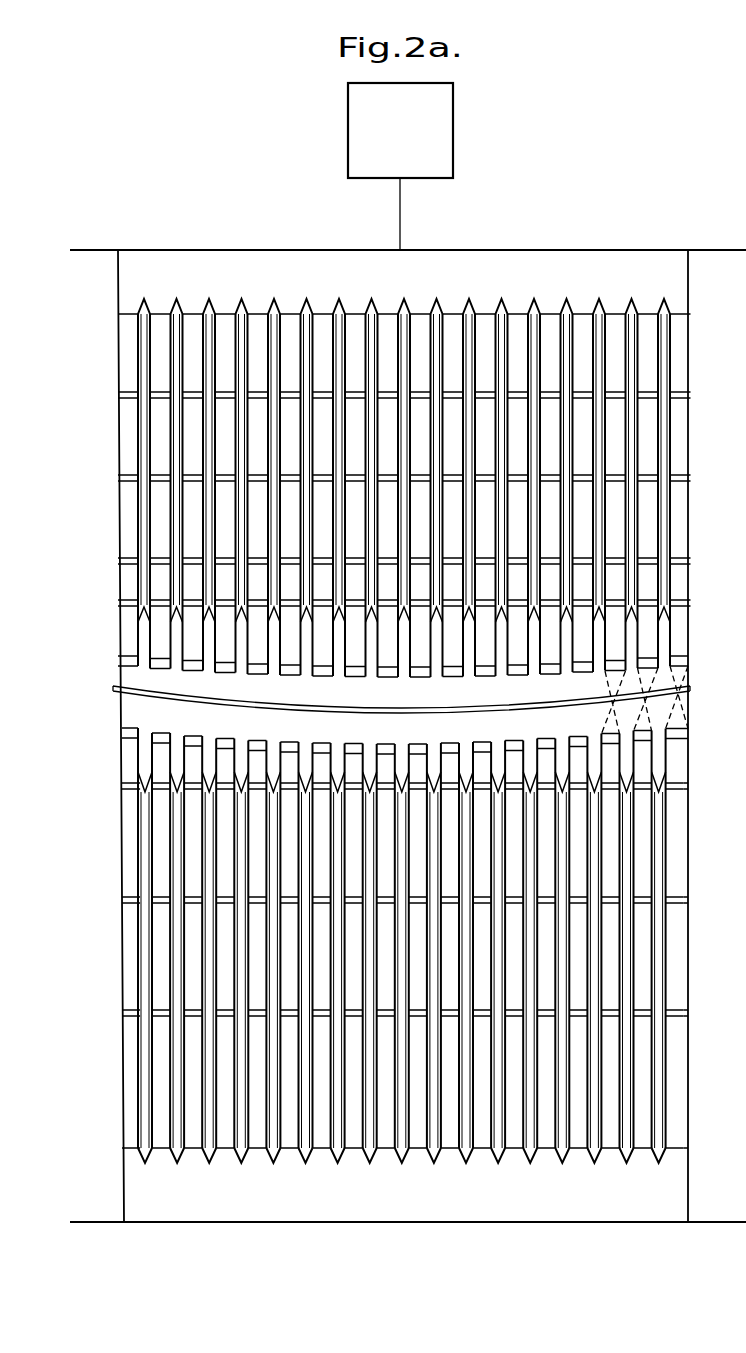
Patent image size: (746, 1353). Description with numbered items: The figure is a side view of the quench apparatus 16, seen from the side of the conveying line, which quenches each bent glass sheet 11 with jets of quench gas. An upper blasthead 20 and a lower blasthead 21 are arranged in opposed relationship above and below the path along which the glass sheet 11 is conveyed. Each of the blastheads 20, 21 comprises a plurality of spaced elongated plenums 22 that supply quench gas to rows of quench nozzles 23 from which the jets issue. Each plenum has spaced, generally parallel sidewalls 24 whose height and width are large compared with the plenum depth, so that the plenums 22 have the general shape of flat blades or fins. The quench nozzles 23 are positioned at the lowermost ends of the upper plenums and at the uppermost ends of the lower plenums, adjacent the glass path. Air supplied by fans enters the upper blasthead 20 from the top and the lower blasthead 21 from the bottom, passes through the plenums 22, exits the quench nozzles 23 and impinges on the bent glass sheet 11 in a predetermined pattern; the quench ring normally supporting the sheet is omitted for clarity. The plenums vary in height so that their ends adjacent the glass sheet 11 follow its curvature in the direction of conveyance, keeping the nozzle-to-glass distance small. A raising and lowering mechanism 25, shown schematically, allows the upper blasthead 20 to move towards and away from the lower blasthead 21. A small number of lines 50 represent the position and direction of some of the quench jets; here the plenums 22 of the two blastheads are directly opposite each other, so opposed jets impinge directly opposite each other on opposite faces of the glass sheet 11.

The bent glass sheet 11 is at (443, 710).
The quench apparatus 16 is at (532, 184).
The upper blasthead 20 is at (110, 455).
The lower blasthead 21 is at (108, 978).
The plenum 22 is at (678, 362).
The quench nozzle 23 is at (162, 668).
The sidewall 24 is at (147, 352).
The raising and lowering mechanism 25 is at (417, 147).
The lines 50 is at (605, 722).